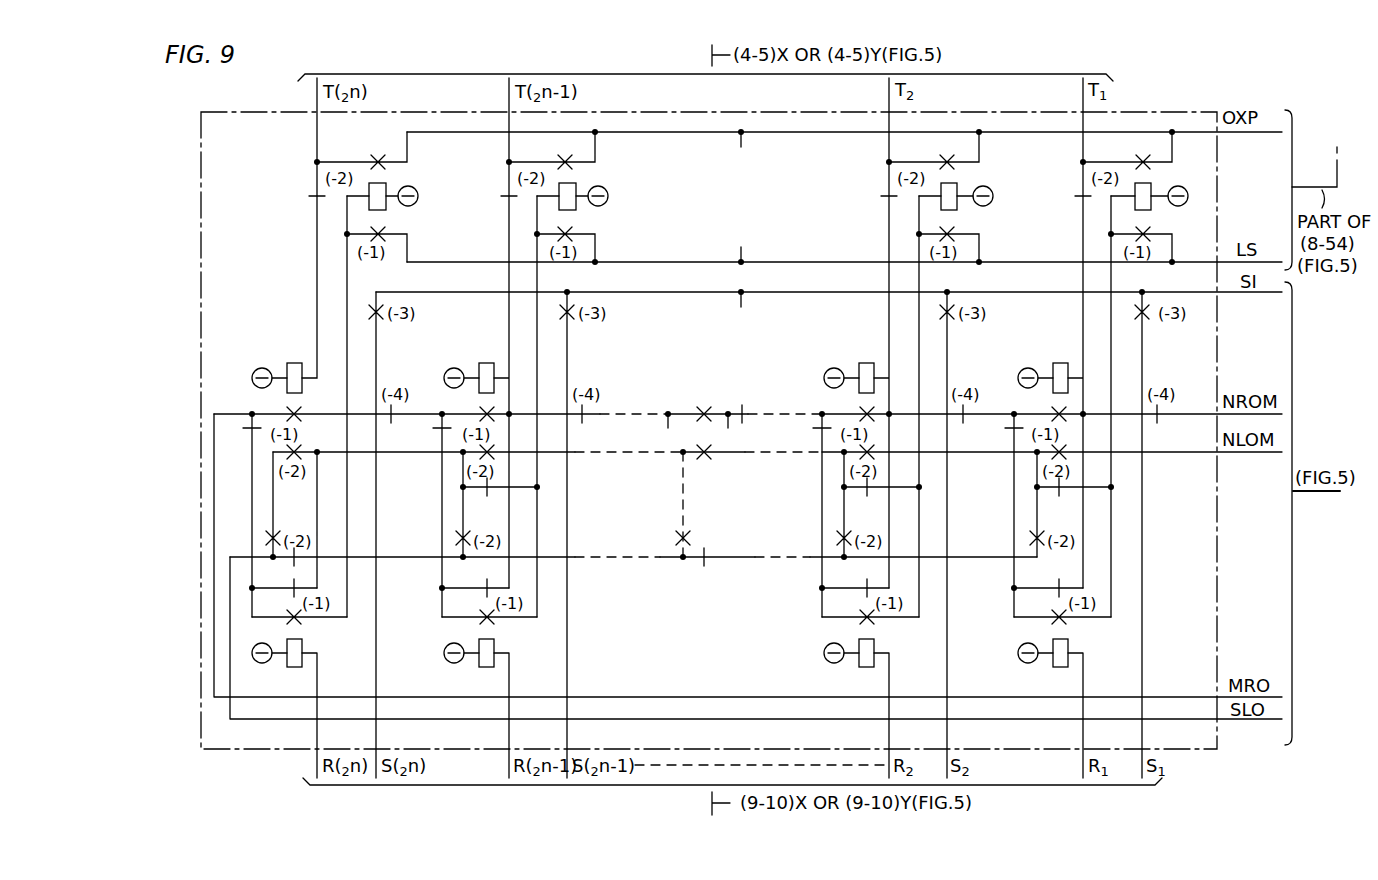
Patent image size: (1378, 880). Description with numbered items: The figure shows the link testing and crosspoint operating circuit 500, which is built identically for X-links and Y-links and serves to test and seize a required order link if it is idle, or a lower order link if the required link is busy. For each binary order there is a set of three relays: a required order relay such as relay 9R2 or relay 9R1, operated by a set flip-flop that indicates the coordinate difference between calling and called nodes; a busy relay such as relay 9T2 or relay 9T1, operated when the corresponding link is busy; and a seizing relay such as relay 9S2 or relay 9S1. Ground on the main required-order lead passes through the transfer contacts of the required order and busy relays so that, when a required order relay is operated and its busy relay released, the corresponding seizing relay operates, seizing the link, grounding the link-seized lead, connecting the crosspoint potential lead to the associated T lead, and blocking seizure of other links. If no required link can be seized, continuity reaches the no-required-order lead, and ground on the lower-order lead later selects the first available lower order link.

The link testing and crosspoint operating circuit 500 is at (264, 112).
The link seizing relay 9S2 is at (957, 188).
The link seizing relay 9S1 is at (1151, 188).
The link busy relay 9T2 is at (872, 363).
The link busy relay 9T1 is at (1066, 363).
The required order relay 9R2 is at (868, 667).
The required order relay 9R1 is at (1062, 667).